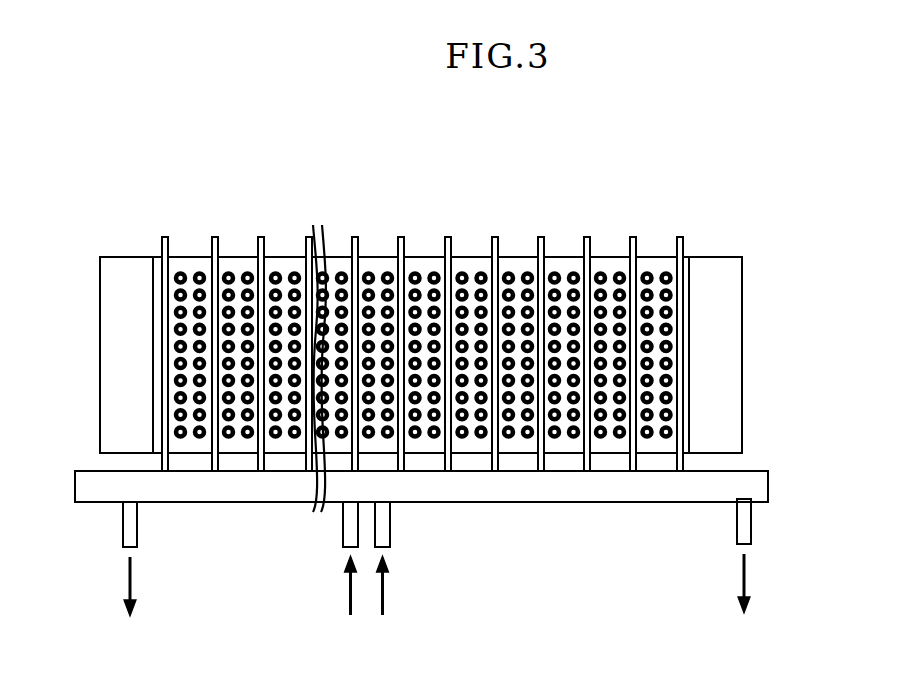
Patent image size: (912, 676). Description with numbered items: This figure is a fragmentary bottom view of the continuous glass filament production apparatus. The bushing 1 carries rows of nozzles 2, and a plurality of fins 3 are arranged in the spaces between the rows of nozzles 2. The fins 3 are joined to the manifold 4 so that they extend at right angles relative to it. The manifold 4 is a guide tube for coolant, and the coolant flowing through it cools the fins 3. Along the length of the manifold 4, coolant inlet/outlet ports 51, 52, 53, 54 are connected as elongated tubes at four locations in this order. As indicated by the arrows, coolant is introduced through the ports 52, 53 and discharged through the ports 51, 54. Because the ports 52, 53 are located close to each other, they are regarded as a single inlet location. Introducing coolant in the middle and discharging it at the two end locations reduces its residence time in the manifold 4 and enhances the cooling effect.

The bushing 1 is at (725, 285).
The nozzles 2 is at (647, 267).
The fins 3 is at (545, 241).
The manifold 4 is at (733, 487).
The coolant inlet/outlet port 51 is at (128, 524).
The coolant inlet/outlet port 52 is at (343, 521).
The coolant inlet/outlet port 53 is at (391, 526).
The coolant inlet/outlet port 54 is at (737, 518).